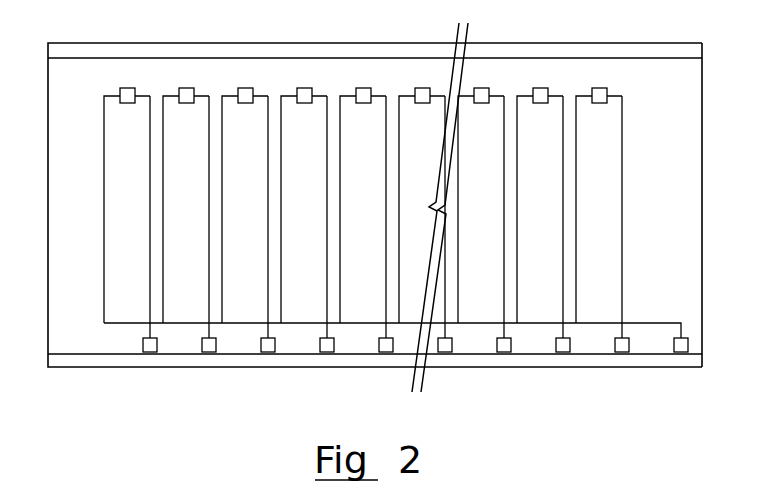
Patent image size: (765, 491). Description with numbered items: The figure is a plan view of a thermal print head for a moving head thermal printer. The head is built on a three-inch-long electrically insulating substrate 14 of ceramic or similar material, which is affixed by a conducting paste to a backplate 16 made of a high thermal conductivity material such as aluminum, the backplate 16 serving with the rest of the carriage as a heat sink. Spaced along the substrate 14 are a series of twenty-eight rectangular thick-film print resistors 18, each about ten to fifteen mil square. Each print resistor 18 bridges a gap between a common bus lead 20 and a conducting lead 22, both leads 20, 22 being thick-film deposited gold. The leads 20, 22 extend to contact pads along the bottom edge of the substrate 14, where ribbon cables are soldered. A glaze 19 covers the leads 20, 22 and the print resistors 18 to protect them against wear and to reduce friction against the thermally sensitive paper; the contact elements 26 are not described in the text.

The electrically insulating substrate 14 is at (668, 255).
The backplate 16 is at (672, 52).
The print resistor 18 is at (186, 88).
The glaze 19 is at (672, 178).
The common bus lead 20 is at (107, 308).
The conducting lead 22 is at (153, 311).
The lower connector terminals 26 is at (270, 352).